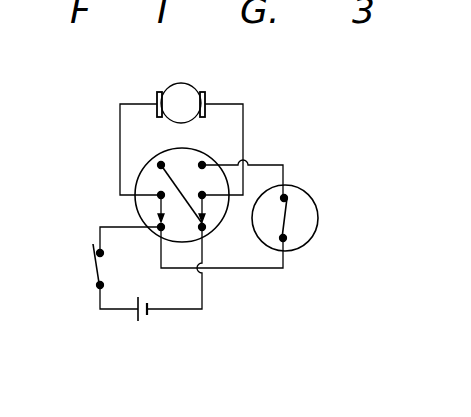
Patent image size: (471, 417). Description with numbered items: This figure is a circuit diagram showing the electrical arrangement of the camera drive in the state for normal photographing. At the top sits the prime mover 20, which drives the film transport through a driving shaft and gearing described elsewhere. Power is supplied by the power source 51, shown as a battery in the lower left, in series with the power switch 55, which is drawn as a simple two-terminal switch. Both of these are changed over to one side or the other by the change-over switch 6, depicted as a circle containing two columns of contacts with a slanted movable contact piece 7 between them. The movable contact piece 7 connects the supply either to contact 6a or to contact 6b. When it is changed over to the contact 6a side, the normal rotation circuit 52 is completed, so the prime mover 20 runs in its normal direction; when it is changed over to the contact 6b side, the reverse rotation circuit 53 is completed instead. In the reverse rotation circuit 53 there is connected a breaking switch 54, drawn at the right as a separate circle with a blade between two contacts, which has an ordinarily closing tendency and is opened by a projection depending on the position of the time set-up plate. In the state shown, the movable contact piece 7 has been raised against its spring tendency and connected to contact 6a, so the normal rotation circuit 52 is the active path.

The prime mover 20 is at (183, 88).
The normal rotation circuit 52 is at (244, 140).
The change-over switch 6 is at (147, 205).
The contact 6b is at (161, 161).
The contact 6a is at (158, 232).
The movable contact piece 7 is at (205, 210).
The breaking switch 54 is at (317, 221).
The reverse rotation circuit 53 is at (238, 272).
The power switch 55 is at (92, 268).
The power source 51 is at (148, 316).